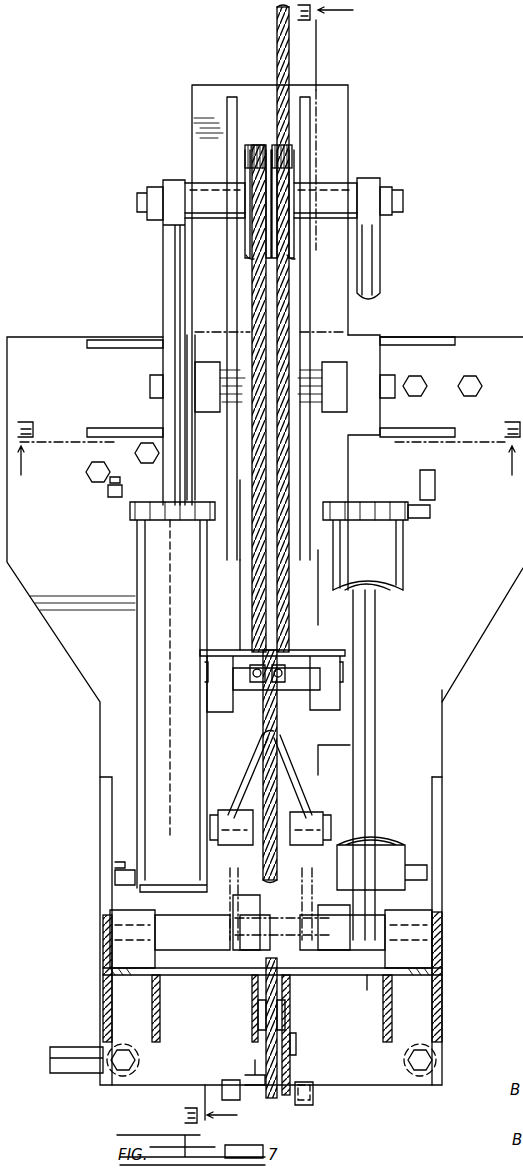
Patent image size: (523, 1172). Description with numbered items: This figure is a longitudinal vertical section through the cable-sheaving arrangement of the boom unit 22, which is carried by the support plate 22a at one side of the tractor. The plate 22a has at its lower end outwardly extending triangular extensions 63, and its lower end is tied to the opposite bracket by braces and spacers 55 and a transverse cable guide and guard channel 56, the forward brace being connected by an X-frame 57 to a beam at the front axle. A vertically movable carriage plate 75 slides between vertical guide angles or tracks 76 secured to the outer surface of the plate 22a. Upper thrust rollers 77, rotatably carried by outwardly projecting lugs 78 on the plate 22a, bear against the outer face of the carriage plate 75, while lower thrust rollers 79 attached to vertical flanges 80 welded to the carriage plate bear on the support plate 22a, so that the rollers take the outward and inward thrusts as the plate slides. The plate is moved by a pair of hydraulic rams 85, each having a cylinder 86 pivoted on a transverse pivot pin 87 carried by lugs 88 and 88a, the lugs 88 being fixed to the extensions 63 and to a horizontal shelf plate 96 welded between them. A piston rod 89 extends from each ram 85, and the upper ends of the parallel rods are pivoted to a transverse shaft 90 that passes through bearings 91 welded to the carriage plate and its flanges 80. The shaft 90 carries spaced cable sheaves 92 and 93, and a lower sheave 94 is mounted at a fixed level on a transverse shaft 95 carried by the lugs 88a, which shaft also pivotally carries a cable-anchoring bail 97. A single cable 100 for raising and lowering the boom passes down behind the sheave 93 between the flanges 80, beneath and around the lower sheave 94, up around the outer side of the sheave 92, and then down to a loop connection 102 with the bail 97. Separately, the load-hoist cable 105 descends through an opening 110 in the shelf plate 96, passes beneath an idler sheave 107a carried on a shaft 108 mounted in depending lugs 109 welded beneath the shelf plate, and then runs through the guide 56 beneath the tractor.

The boom unit 22 is at (48, 331).
The support plate 22a is at (462, 655).
The braces and spacers 55 is at (118, 1076).
The cable guide and guard channel 56 is at (313, 1096).
The X-frame 57 is at (63, 1047).
The triangular extensions 63 is at (100, 859).
The carriage plate 75 is at (192, 85).
The vertical guide angles or tracks 76 is at (168, 666).
The upper thrust rollers 77 is at (205, 370).
The lugs 78 is at (193, 420).
The lower thrust rollers 79 is at (215, 712).
The flanges 80 is at (228, 612).
The hydraulic rams 85 is at (136, 555).
The cylinder 86 is at (137, 636).
The transverse pivot pin 87 is at (110, 926).
The lugs 88 is at (110, 968).
The lugs 88a is at (207, 975).
The piston rod 89 is at (163, 270).
The transverse shaft 90 is at (137, 196).
The bearings 91 is at (200, 183).
The cable sheave 92 is at (247, 152).
The cable sheave 93 is at (292, 160).
The cable sheave 94 is at (290, 800).
The transverse shaft 95 is at (248, 810).
The shelf plate 96 is at (367, 990).
The cable-anchoring bail 97 is at (255, 746).
The cable 100 is at (277, 21).
The loop connection 102 is at (283, 696).
The load-hoist cable 105 is at (285, 1000).
The idler sheave 107a is at (255, 1076).
The shaft 108 is at (296, 1044).
The depending lugs 109 is at (260, 1086).
The opening 110 is at (278, 968).